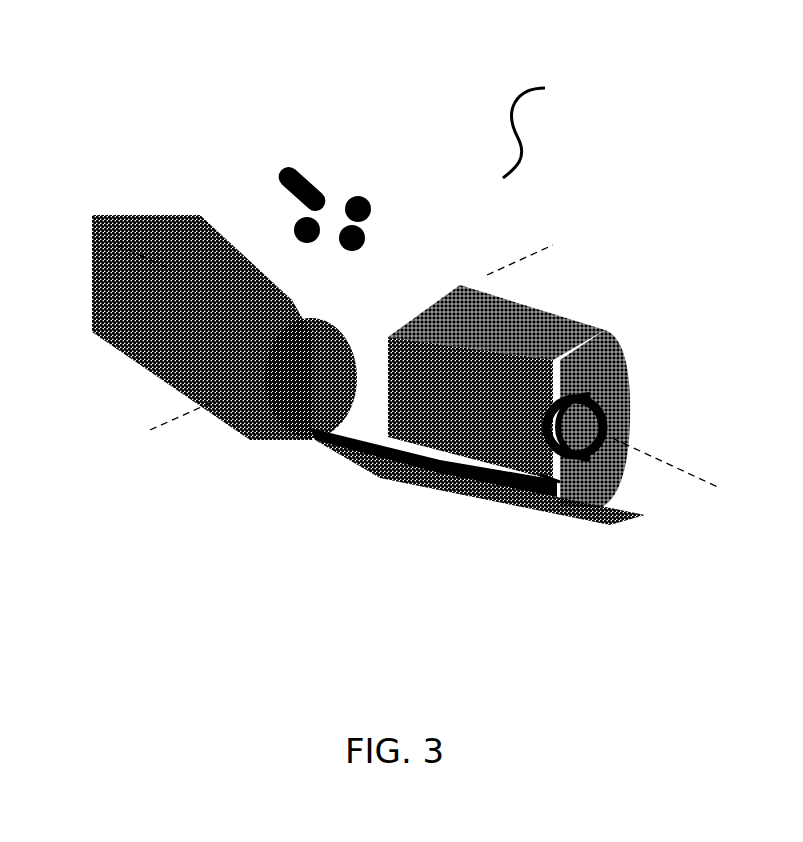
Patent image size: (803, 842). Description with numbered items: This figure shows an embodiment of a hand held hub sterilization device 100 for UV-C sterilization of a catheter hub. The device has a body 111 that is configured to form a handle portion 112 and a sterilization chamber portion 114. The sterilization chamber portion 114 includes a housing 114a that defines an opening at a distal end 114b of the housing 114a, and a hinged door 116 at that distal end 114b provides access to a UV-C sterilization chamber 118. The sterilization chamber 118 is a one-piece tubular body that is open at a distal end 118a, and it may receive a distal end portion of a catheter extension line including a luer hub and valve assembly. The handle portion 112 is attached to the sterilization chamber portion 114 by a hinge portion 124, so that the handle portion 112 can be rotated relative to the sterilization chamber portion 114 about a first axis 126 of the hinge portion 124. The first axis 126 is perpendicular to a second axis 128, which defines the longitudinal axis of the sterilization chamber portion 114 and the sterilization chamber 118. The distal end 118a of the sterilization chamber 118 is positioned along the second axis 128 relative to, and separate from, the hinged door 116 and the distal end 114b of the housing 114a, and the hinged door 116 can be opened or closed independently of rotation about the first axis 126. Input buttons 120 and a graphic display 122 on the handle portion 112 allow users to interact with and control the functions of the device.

The hand held hub sterilization device 100 is at (542, 131).
The body 111 is at (90, 443).
The handle portion 112 is at (186, 297).
The sterilization chamber portion 114 is at (402, 454).
The housing 114a is at (590, 333).
The distal end of the housing 114b is at (635, 386).
The hinged door 116 is at (622, 430).
The UV-C sterilization chamber 118 is at (468, 403).
The distal end of the sterilization chamber 118a is at (560, 481).
The input buttons 120 is at (357, 207).
The graphic display 122 is at (543, 320).
The hinge portion 124 is at (317, 390).
The first axis 126 is at (553, 245).
The second axis 128 is at (133, 253).